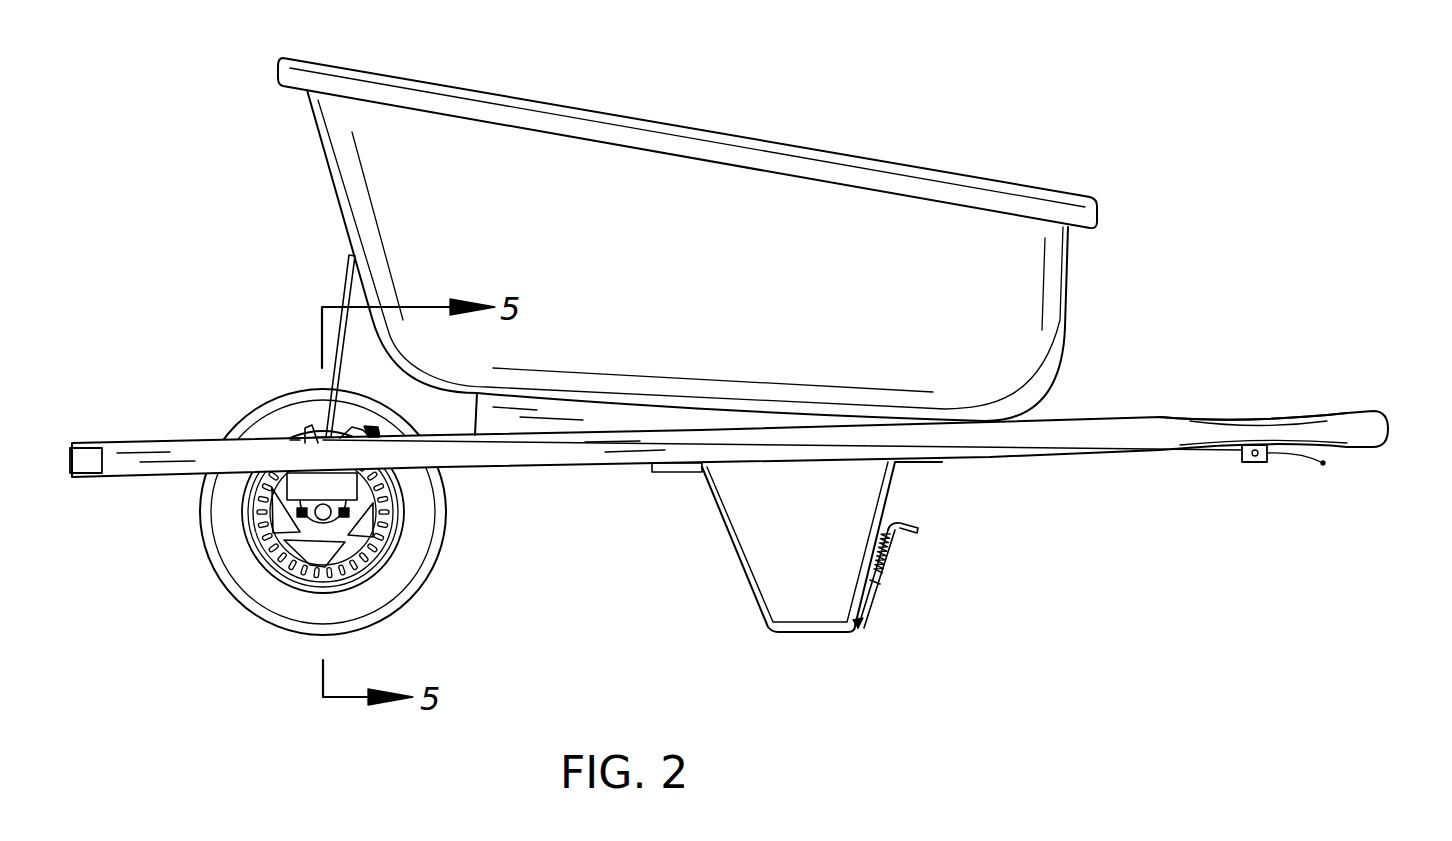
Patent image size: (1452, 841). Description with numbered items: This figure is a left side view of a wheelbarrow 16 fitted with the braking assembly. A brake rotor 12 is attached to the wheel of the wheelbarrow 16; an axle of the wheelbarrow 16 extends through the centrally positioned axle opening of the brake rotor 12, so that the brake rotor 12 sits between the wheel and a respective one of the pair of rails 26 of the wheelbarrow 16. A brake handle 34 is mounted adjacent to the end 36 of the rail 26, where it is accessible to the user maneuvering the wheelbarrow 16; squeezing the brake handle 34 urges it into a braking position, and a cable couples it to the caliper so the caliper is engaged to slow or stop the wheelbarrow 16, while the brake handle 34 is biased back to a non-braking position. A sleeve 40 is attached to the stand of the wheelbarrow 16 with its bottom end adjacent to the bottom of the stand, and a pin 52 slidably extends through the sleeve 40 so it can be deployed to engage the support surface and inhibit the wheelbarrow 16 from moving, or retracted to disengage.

The brake rotor 12 is at (302, 578).
The wheelbarrow 16 is at (973, 172).
The rail 26 is at (598, 465).
The brake handle 34 is at (1290, 466).
The end 36 is at (1390, 422).
The sleeve 40 is at (872, 602).
The pin 52 is at (900, 523).